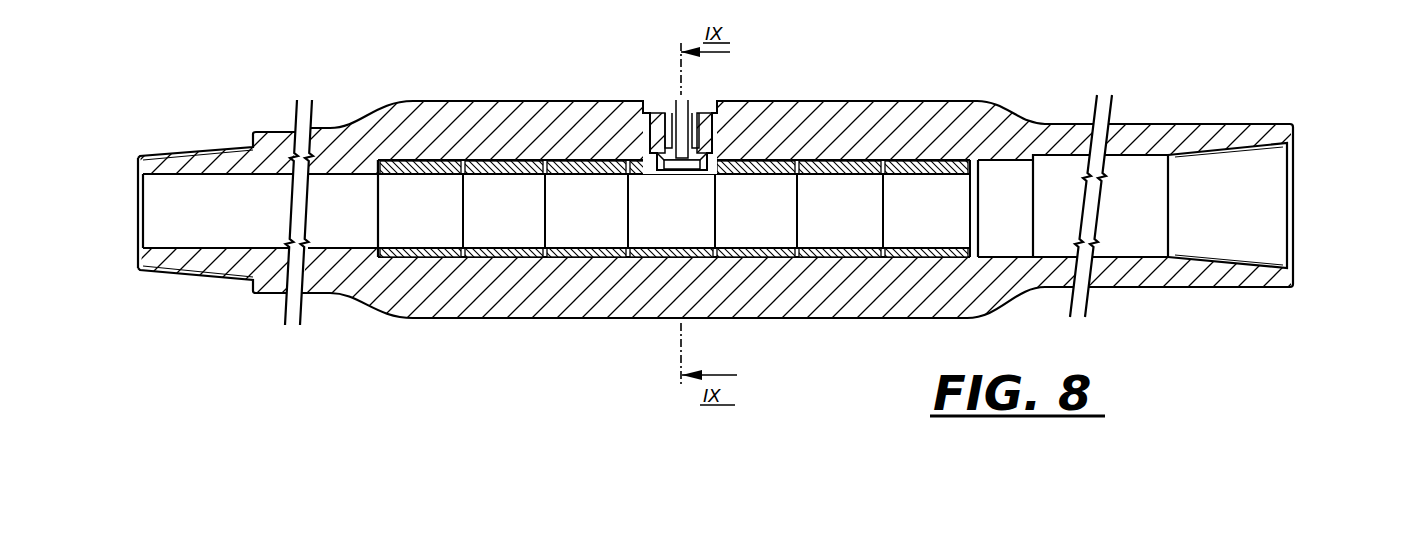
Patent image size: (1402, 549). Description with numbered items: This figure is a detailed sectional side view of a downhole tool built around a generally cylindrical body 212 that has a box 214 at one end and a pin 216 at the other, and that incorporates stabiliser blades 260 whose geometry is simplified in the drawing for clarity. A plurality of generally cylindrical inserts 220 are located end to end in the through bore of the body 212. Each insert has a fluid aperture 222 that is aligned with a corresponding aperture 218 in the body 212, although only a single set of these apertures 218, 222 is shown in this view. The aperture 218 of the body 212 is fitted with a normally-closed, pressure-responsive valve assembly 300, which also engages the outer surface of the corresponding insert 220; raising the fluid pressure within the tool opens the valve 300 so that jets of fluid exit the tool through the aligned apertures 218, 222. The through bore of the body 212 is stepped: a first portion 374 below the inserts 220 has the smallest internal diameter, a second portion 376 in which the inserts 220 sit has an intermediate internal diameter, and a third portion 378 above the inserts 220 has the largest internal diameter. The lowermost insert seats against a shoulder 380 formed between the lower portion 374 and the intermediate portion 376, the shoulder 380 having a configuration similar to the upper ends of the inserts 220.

The body 212 is at (1130, 135).
The box 214 is at (1260, 147).
The pin 216 is at (197, 150).
The aperture 218 is at (717, 120).
The inserts 220 is at (437, 258).
The fluid aperture 222 is at (687, 172).
The stabiliser blades 260 is at (870, 101).
The valve assembly 300 is at (721, 130).
The portion 374 is at (243, 197).
The portion 376 is at (497, 160).
The portion 378 is at (1043, 155).
The shoulder 380 is at (377, 170).